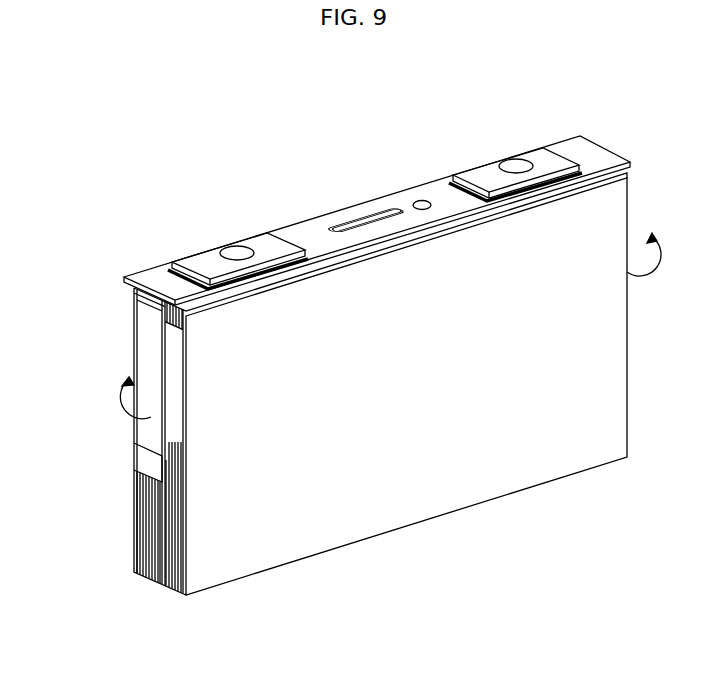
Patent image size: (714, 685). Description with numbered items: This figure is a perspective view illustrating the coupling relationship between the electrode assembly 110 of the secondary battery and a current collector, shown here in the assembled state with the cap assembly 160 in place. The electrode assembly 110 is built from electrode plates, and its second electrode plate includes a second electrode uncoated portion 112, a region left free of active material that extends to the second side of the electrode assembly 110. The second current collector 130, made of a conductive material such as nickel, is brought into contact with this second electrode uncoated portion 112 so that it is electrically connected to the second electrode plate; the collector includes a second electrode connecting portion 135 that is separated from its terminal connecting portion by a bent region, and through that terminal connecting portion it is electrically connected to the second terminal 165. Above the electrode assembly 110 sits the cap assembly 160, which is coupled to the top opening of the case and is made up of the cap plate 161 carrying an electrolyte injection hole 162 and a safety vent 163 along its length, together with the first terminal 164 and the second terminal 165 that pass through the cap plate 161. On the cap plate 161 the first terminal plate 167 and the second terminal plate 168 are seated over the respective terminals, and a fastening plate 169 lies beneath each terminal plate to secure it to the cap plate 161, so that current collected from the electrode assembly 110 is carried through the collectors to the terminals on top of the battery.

The electrode assembly 110 is at (453, 504).
The second electrode uncoated portion 112 is at (147, 366).
The second current collector 130 is at (124, 291).
The second electrode connecting portion 135 is at (145, 300).
The cap assembly 160 is at (366, 190).
The cap plate 161 is at (310, 228).
The electrolyte injection hole 162 is at (415, 201).
The safety vent 163 is at (346, 220).
The first terminal 164 is at (510, 164).
The second terminal 165 is at (235, 248).
The first terminal plate 167 is at (556, 146).
The second terminal plate 168 is at (196, 250).
The fastening plate 169 is at (170, 264).